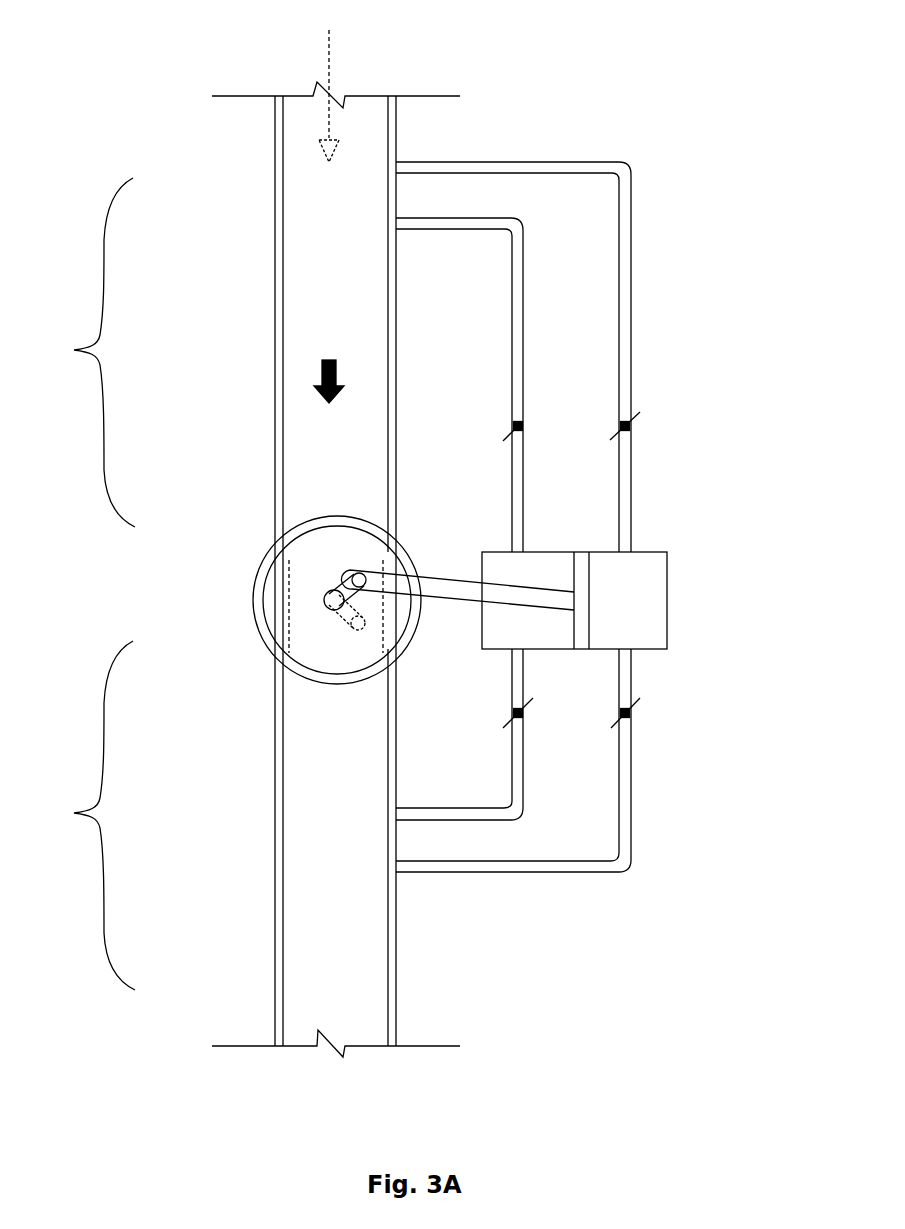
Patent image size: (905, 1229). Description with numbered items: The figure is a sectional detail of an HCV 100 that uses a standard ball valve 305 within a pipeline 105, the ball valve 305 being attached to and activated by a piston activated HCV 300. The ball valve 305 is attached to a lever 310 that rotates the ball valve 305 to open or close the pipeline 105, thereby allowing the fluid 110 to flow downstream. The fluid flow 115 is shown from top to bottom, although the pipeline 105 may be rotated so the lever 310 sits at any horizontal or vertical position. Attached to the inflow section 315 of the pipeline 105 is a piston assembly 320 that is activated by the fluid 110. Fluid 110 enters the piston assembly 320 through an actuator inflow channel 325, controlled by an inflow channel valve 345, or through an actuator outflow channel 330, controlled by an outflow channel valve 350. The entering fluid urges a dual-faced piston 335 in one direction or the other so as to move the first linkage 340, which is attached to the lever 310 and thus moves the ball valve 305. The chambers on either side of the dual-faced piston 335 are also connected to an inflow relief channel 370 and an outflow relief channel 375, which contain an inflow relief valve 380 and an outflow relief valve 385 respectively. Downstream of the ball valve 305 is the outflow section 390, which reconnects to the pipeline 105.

The HCV 100 is at (484, 1060).
The pipeline 105 is at (278, 275).
The fluid 110 is at (331, 81).
The fluid flow 115 is at (321, 372).
The piston activated HCV 300 is at (538, 965).
The ball valve 305 is at (275, 650).
The lever 310 is at (352, 584).
The inflow section 315 is at (81, 352).
The piston assembly 320 is at (667, 600).
The actuator inflow channel 325 is at (627, 229).
The actuator outflow channel 330 is at (518, 295).
The dual-faced piston 335 is at (592, 598).
The linkage-1 340 is at (428, 585).
The inflow channel valve 345 is at (630, 422).
The outflow channel valve 350 is at (518, 426).
The inflow relief channel 370 is at (628, 770).
The outflow relief channel 375 is at (518, 768).
The inflow relief valve 380 is at (630, 717).
The outflow relief valve 385 is at (522, 717).
The outflow section 390 is at (81, 815).